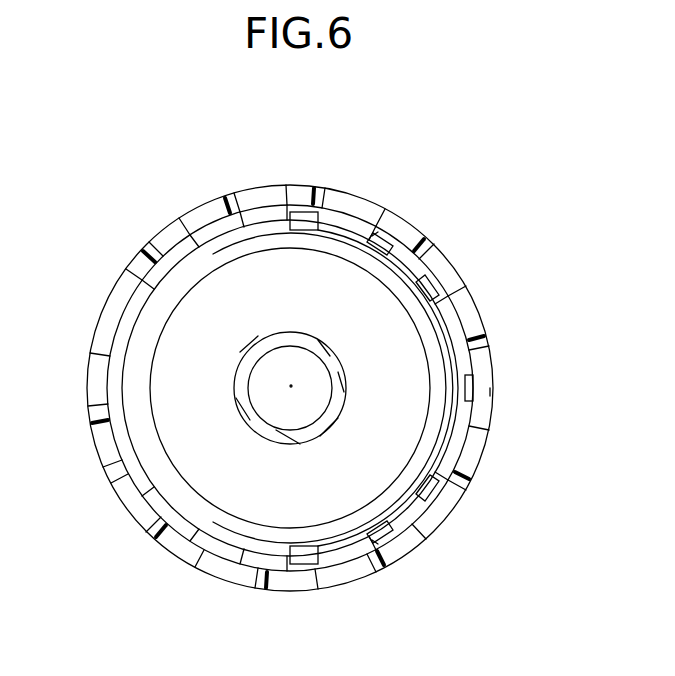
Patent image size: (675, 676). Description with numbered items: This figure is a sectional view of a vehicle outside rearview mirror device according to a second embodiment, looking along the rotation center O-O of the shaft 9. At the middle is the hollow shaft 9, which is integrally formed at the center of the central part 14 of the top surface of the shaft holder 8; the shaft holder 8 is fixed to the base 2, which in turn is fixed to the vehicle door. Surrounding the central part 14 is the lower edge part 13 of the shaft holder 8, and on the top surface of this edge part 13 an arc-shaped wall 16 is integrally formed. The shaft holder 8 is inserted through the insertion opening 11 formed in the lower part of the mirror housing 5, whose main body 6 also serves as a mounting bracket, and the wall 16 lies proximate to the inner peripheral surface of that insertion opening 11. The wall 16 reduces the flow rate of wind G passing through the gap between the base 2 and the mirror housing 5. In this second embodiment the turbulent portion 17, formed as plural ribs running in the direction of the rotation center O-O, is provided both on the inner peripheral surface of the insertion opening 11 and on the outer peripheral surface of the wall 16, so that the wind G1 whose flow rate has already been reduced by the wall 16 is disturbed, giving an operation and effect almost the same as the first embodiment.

The base 2 is at (153, 246).
The mirror housing 5 is at (123, 270).
The main body 6 is at (380, 203).
The shaft holder 8 is at (182, 232).
The shaft 9 is at (237, 360).
The insertion opening 11 is at (464, 490).
The edge part 13 is at (240, 556).
The central part 14 is at (233, 482).
The wall 16 is at (467, 336).
The turbulent portion 17 is at (352, 214).
The wind G is at (502, 392).
The wind G1 is at (380, 229).
The rotation center O-O is at (291, 386).